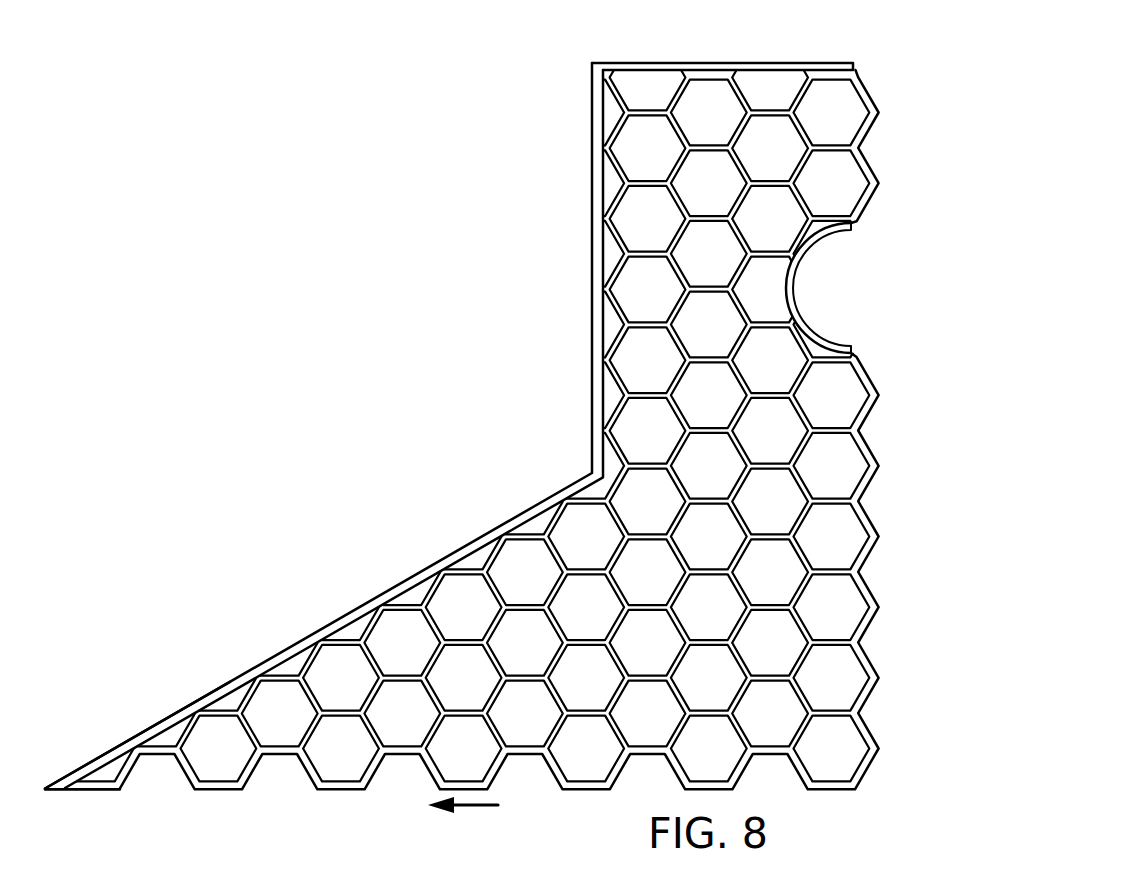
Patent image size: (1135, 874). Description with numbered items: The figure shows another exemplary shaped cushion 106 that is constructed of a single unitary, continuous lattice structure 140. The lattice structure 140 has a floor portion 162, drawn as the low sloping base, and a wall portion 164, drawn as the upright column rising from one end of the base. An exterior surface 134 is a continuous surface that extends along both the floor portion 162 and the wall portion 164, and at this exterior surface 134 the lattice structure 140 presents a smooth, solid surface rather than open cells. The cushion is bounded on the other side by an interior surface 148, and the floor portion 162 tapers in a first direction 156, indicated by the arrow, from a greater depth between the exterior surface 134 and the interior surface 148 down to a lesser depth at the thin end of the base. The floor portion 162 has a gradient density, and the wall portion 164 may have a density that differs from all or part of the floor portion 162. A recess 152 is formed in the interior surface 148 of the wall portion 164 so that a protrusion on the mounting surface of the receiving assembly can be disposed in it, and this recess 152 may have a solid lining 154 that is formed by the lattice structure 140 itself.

The shaped cushion 106 is at (174, 241).
The exterior surface 134 is at (229, 682).
The lattice structure 140 is at (874, 662).
The interior surface 148 is at (868, 483).
The recess 152 is at (861, 259).
The solid lining 154 is at (795, 288).
The first direction 156 is at (475, 810).
The floor portion 162 is at (402, 544).
The wall portion 164 is at (615, 55).